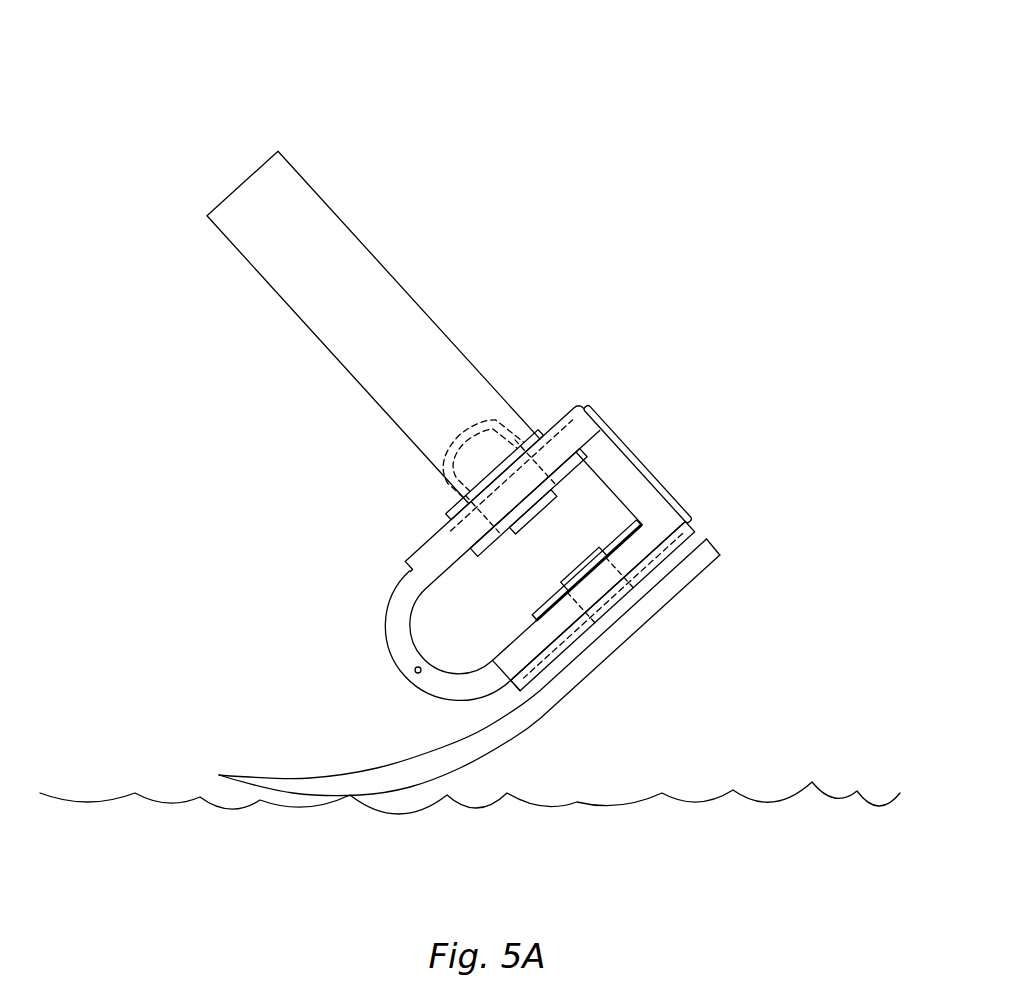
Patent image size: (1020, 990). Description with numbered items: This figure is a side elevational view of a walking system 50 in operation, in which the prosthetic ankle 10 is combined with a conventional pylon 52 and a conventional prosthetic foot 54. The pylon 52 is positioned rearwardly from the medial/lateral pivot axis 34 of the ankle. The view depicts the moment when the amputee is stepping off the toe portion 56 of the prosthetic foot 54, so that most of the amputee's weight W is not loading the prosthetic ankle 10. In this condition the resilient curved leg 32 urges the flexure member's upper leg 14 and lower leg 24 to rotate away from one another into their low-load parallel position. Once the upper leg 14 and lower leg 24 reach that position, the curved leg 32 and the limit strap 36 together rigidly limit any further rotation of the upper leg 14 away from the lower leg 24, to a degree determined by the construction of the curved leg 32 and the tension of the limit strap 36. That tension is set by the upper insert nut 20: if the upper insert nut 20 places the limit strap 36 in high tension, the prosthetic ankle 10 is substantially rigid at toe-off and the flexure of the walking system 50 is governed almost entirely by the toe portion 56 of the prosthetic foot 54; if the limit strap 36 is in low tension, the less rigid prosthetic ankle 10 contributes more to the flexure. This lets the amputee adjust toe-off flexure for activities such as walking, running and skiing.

The prosthetic ankle 10 is at (499, 549).
The upper leg 14 is at (476, 466).
The upper insert nut 20 is at (557, 535).
The lower leg 24 is at (594, 596).
The resilient curved leg 32 is at (516, 566).
The medial/lateral pivot axis 34 is at (413, 670).
The limit strap 36 is at (637, 463).
The walking system 50 is at (463, 439).
The pylon 52 is at (330, 138).
The prosthetic foot 54 is at (469, 700).
The toe portion 56 is at (349, 785).
The amputee's weight W is at (247, 162).